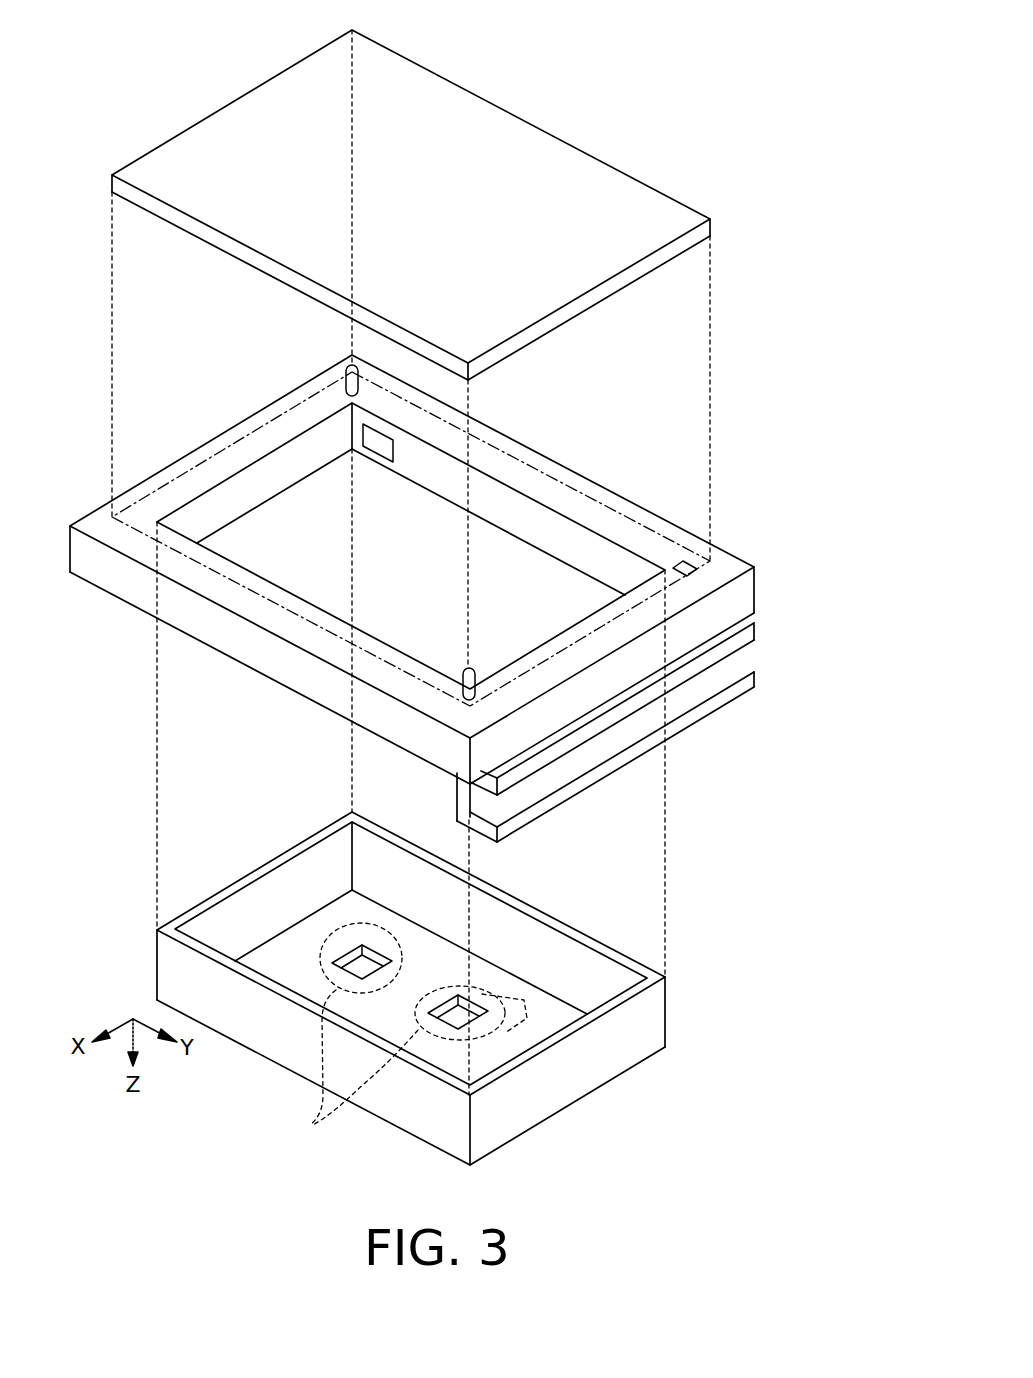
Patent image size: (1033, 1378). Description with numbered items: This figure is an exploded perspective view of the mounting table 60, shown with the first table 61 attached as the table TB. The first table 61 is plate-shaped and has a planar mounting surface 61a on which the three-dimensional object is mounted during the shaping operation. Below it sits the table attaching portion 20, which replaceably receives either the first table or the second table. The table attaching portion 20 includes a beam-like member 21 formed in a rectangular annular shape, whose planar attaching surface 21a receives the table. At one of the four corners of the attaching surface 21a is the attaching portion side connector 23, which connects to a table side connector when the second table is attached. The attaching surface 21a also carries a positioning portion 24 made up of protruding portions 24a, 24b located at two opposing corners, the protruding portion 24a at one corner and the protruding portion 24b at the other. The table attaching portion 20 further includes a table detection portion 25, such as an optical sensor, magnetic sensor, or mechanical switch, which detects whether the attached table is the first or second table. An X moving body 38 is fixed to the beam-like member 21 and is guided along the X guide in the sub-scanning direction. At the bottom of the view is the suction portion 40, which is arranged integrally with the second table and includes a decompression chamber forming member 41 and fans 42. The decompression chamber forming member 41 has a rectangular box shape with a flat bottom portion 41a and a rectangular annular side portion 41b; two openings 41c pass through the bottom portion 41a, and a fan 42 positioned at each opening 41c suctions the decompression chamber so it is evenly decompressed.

The mounting table 60 is at (688, 69).
The first table 61 is at (502, 105).
The mounting surface 61a is at (588, 175).
The table attaching portion 20 is at (764, 550).
The beam-like member 21 is at (756, 588).
The attaching surface 21a is at (195, 462).
The attaching portion side connector 23 is at (690, 560).
The positioning portion 24 is at (365, 507).
The protruding portion 24a is at (463, 673).
The protruding portion 24b is at (347, 366).
The table detection portion 25 is at (378, 448).
The X moving body 38 is at (757, 677).
The suction portion 40 is at (384, 1134).
The decompression chamber forming member 41 is at (667, 1005).
The bottom portion 41a is at (498, 992).
The side portion 41b is at (253, 913).
The opening 41c is at (355, 955).
The fan 42 is at (313, 1125).